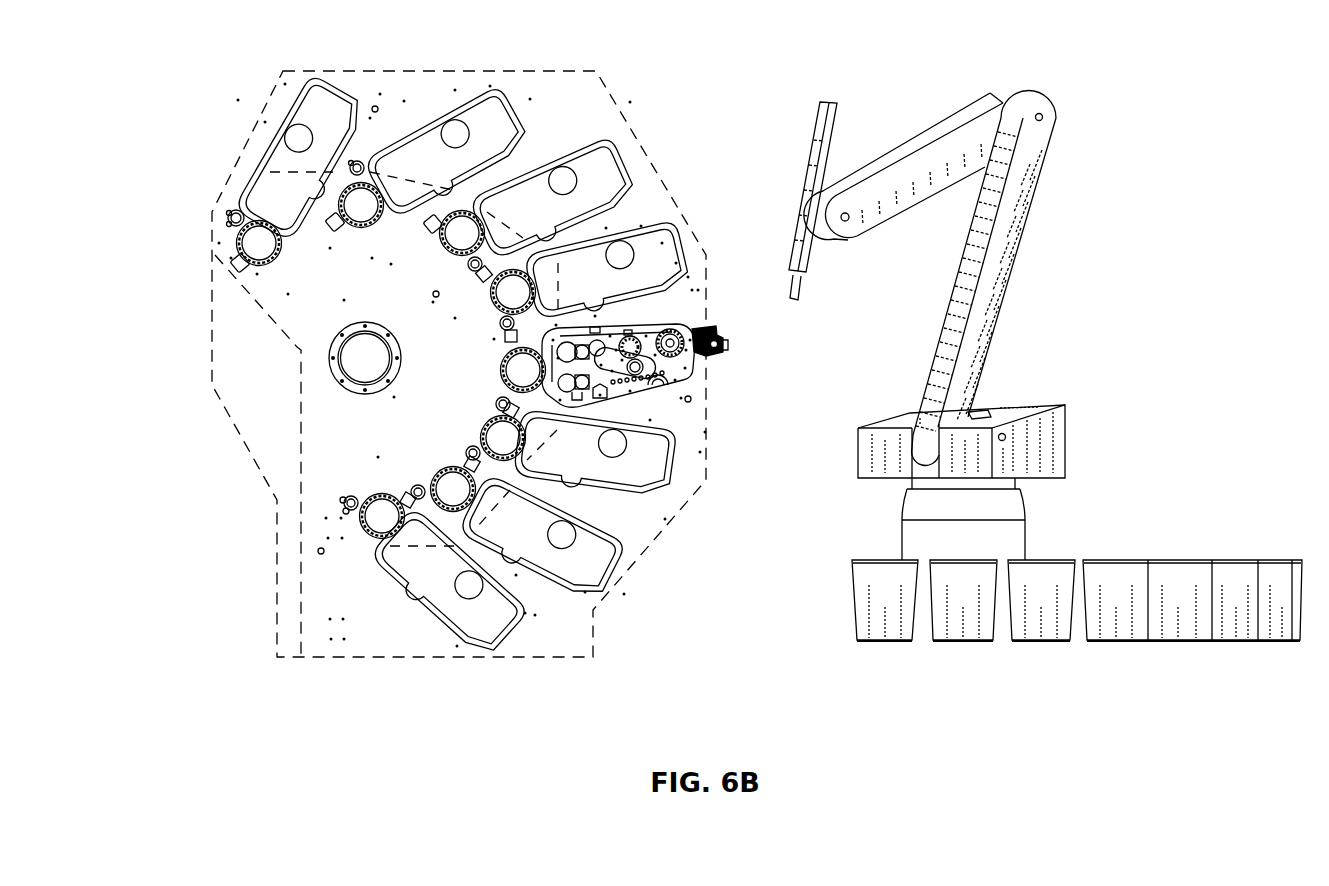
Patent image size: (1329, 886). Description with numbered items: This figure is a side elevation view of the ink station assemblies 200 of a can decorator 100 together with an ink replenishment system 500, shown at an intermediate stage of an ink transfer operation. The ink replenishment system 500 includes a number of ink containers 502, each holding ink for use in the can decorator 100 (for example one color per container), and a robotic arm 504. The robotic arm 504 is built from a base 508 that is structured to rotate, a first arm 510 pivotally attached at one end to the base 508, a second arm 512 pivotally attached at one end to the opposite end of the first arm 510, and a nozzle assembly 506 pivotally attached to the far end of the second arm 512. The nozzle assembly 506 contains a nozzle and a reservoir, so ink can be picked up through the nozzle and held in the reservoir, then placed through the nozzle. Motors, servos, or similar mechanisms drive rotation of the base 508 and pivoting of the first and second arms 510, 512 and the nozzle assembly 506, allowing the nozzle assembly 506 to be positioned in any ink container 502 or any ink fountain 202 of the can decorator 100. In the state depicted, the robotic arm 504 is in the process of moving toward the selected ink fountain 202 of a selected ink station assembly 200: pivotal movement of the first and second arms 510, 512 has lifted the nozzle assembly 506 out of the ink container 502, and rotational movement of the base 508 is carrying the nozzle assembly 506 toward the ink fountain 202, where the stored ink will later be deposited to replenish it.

The can decorator 100 is at (143, 175).
The ink station assembly 200 is at (618, 325).
The ink fountain 202 is at (705, 330).
The ink replenishment system 500 is at (1153, 314).
The ink container 502 is at (893, 642).
The robotic arm 504 is at (987, 80).
The nozzle assembly 506 is at (820, 118).
The base 508 is at (1015, 532).
The first arm 510 is at (995, 252).
The second arm 512 is at (932, 153).